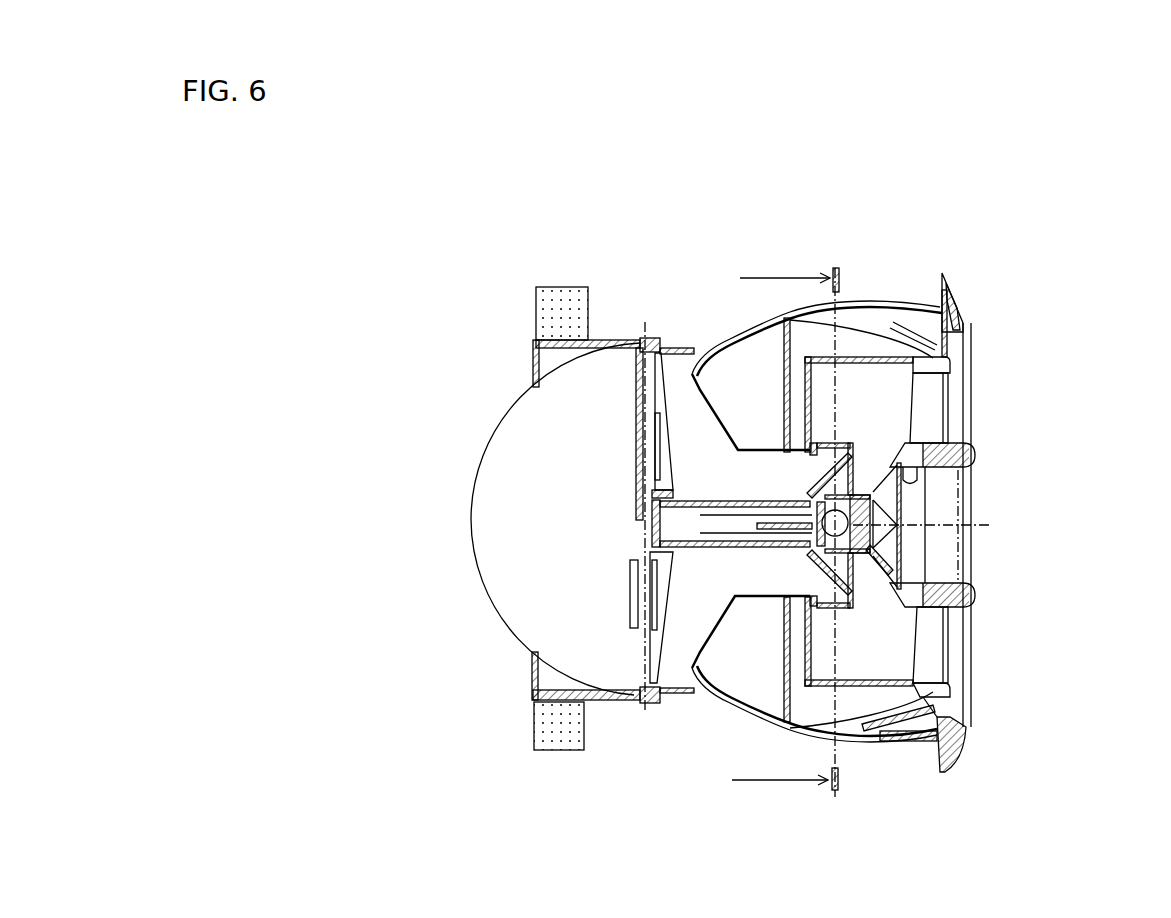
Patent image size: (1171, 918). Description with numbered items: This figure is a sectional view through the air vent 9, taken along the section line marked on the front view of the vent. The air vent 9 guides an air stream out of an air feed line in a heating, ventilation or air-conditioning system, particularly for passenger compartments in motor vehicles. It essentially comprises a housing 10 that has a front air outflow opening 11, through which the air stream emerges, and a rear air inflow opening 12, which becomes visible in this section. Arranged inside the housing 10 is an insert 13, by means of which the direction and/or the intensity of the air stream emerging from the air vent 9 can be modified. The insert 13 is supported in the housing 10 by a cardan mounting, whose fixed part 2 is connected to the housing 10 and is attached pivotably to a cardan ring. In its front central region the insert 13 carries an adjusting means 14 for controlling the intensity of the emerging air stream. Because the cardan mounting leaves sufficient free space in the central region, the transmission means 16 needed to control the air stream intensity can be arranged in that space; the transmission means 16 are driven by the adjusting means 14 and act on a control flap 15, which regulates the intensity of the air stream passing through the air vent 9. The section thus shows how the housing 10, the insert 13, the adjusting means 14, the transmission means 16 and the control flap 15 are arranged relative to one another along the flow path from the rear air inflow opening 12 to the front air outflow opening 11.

The air vent 9 is at (458, 260).
The fixed part 2 is at (752, 478).
The housing 10 is at (962, 297).
The front air outflow opening 11 is at (994, 409).
The rear air inflow opening 12 is at (466, 404).
The insert 13 is at (933, 655).
The adjusting means 14 is at (950, 558).
The control flap 15 is at (510, 570).
The transmission means 16 is at (718, 523).